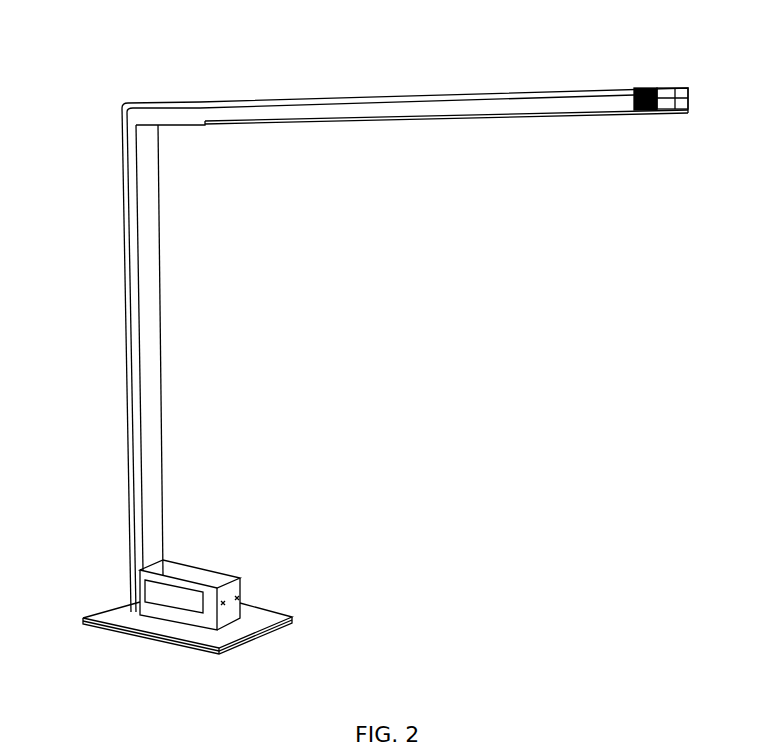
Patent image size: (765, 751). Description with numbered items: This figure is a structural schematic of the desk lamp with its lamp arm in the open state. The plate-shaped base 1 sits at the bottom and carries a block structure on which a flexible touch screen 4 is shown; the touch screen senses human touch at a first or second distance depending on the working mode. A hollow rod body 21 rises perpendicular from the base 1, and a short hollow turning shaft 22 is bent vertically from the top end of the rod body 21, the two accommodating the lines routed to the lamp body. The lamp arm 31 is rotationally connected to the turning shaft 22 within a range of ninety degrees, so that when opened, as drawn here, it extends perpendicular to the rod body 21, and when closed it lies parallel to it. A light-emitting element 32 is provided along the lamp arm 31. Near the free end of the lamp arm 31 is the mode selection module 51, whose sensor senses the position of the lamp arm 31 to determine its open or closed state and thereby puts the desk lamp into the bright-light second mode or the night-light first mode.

The base 1 is at (177, 641).
The flexible touch screen 4 is at (152, 592).
The rod body 21 is at (143, 295).
The turning shaft 22 is at (157, 106).
The lamp arm 31 is at (343, 98).
The light-emitting element 32 is at (487, 112).
The mode selection module 51 is at (639, 88).